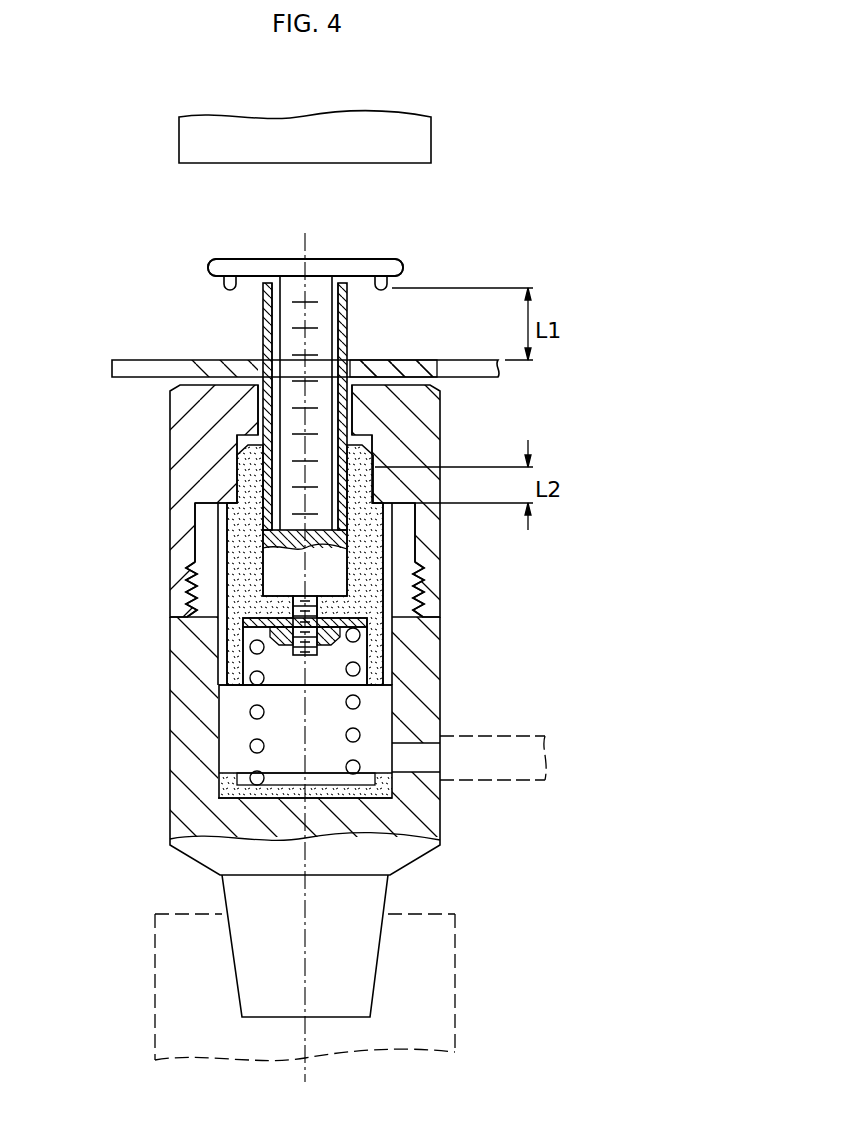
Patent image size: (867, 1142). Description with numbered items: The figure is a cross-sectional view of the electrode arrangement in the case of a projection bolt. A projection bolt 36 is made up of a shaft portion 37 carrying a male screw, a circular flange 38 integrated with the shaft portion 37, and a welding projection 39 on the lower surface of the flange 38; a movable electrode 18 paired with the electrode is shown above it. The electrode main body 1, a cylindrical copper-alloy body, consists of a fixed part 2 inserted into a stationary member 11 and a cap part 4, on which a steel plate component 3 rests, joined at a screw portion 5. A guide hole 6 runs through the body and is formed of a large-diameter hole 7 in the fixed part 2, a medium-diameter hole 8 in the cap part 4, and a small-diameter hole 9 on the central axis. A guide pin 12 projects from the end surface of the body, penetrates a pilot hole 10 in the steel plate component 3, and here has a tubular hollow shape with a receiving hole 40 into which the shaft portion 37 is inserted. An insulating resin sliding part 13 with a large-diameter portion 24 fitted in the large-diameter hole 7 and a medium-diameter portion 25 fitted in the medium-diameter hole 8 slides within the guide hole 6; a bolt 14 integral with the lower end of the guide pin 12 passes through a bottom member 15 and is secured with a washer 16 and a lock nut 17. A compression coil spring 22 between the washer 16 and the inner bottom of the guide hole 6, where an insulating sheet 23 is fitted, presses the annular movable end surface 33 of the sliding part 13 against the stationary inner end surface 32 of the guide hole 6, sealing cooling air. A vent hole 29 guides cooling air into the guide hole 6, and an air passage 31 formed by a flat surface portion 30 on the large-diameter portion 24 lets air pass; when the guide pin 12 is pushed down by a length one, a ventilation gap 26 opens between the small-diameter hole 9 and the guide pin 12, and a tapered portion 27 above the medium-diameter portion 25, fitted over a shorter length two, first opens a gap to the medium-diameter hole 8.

The electrode main body 1 is at (137, 428).
The fixed part 2 is at (172, 820).
The steel plate component 3 is at (133, 360).
The cap part 4 is at (170, 405).
The screw portion 5 is at (192, 597).
The guide hole 6 is at (232, 736).
The large-diameter hole 7 is at (223, 697).
The medium-diameter hole 8 is at (242, 476).
The small-diameter hole 9 is at (351, 413).
The pilot hole 10 is at (349, 362).
The stationary member 11 is at (457, 993).
The guide pin 12 is at (262, 312).
The sliding part 13 is at (230, 531).
The bolt 14 is at (282, 620).
The bottom member 15 is at (330, 608).
The washer 16 is at (286, 636).
The lock nut 17 is at (328, 636).
The movable electrode 18 is at (432, 133).
The compression coil spring 22 is at (360, 701).
The insulating sheet 23 is at (334, 812).
The large-diameter portion 24 is at (418, 601).
The medium-diameter portion 25 is at (365, 487).
The ventilation gap 26 is at (258, 405).
The tapered portion 27 is at (237, 446).
The vent hole 29 is at (427, 760).
The flat surface portion 30 is at (392, 667).
The air passage 31 is at (388, 633).
The stationary inner end surface 32 is at (403, 510).
The movable end surface 33 is at (237, 492).
The projection bolt 36 is at (281, 258).
The shaft portion 37 is at (322, 307).
The circular flange 38 is at (373, 258).
The welding projection 39 is at (223, 283).
The receiving hole 40 is at (283, 325).